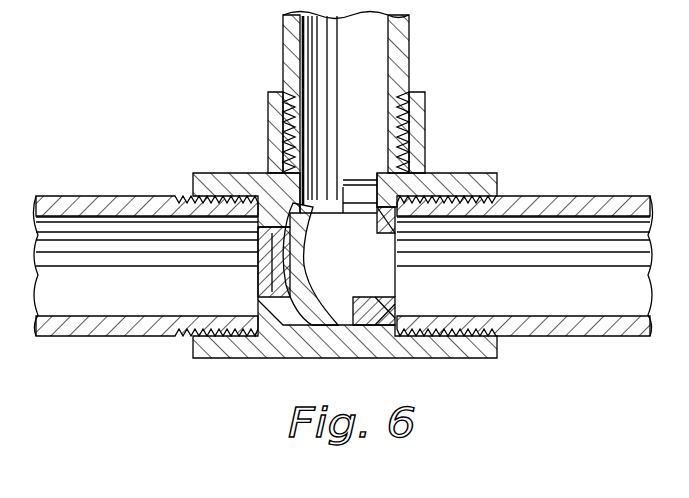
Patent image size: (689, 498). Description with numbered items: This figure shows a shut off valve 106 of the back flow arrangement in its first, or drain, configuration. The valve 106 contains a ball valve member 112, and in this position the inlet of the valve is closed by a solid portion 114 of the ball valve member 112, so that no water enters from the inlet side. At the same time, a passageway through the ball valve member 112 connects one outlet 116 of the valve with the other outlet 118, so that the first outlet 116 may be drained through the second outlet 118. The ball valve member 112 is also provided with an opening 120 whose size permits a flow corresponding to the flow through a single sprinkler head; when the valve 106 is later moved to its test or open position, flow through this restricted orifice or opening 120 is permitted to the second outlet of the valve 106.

The valve 106 is at (466, 358).
The ball valve member 112 is at (360, 271).
The solid portion 114 is at (260, 257).
The outlet 116 is at (424, 92).
The outlet 118 is at (472, 173).
The opening 120 is at (343, 313).